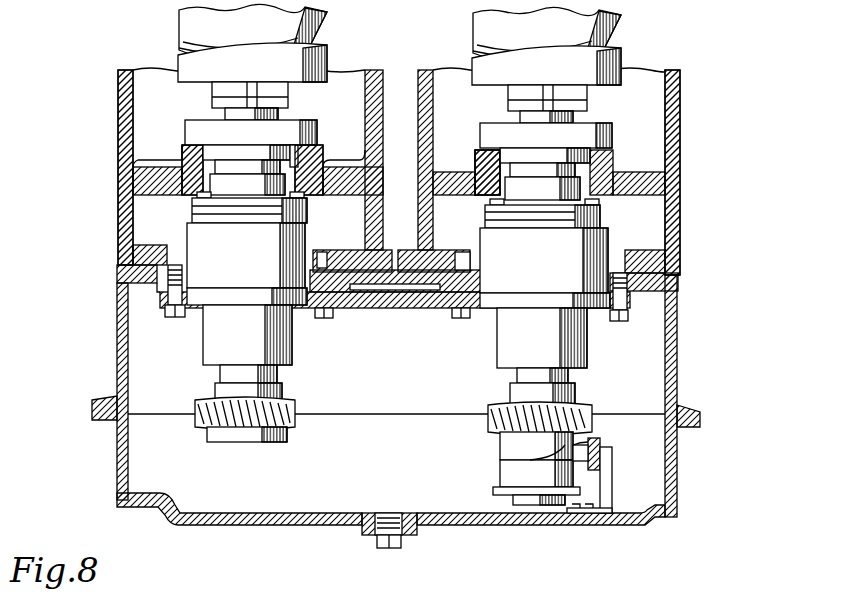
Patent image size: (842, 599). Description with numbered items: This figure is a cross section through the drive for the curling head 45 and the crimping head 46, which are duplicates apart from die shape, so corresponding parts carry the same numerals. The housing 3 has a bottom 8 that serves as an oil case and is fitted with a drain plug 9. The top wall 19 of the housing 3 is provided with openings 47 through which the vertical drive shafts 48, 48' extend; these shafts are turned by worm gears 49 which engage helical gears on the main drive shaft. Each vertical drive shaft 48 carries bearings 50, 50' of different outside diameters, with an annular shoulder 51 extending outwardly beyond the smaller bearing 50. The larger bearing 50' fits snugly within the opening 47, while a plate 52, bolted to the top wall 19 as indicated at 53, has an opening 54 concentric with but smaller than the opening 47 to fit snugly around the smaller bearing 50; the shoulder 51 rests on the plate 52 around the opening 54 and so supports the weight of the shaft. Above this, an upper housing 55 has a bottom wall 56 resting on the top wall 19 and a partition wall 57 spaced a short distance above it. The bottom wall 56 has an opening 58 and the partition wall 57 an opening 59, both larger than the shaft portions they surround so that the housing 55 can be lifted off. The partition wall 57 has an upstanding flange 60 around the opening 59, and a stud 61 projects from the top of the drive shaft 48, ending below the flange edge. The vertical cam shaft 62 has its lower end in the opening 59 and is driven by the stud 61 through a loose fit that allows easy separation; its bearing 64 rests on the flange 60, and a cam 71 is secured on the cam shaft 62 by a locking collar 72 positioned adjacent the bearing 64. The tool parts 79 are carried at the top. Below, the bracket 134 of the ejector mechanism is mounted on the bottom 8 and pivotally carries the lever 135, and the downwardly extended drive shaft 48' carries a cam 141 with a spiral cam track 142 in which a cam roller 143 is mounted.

The housing 3 is at (117, 330).
The bottom 8 is at (117, 460).
The drain plug 9 is at (376, 545).
The top wall 19 is at (678, 280).
The curling head 45 is at (118, 72).
The crimping head 46 is at (682, 72).
The openings 47 is at (323, 318).
The vertical drive shaft 48 is at (227, 382).
The vertical drive shaft 48' is at (516, 386).
The worm gears 49 is at (240, 420).
The bearing 50 is at (372, 336).
The bearing 50' is at (371, 223).
The annular shoulder 51 is at (200, 300).
The plate 52 is at (388, 300).
The bolts 53 is at (618, 321).
The opening 54 is at (212, 300).
The housing 55 is at (118, 113).
The bottom wall 56 is at (460, 252).
The partition wall 57 is at (337, 178).
The opening 58 is at (323, 252).
The opening 59 is at (295, 165).
The upstanding flange 60 is at (184, 154).
The stud 61 is at (278, 168).
The vertical cam shaft 62 is at (232, 98).
The bearing 64 is at (220, 116).
The cam 71 is at (320, 50).
The locking collar 72 is at (285, 101).
The cutter cup 79 is at (212, 46).
The bracket 134 is at (612, 480).
The lever 135 is at (592, 438).
The cam 141 is at (508, 452).
The spiral cam track 142 is at (515, 474).
The cam roller 143 is at (600, 452).